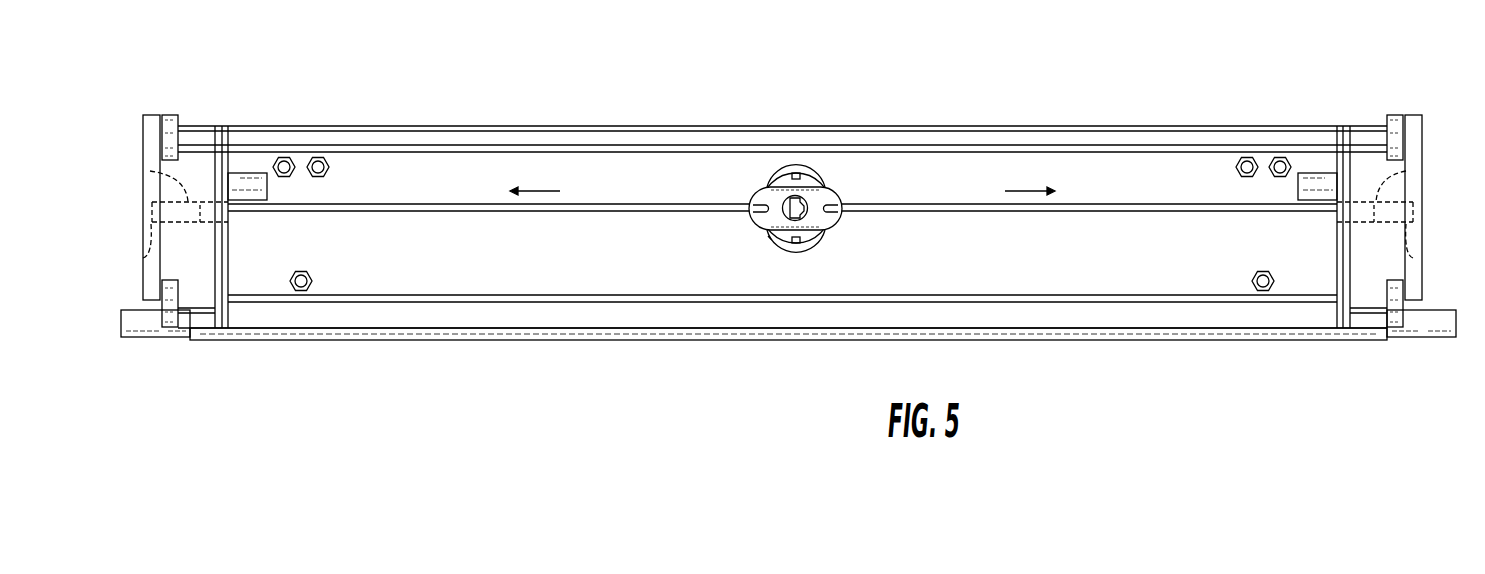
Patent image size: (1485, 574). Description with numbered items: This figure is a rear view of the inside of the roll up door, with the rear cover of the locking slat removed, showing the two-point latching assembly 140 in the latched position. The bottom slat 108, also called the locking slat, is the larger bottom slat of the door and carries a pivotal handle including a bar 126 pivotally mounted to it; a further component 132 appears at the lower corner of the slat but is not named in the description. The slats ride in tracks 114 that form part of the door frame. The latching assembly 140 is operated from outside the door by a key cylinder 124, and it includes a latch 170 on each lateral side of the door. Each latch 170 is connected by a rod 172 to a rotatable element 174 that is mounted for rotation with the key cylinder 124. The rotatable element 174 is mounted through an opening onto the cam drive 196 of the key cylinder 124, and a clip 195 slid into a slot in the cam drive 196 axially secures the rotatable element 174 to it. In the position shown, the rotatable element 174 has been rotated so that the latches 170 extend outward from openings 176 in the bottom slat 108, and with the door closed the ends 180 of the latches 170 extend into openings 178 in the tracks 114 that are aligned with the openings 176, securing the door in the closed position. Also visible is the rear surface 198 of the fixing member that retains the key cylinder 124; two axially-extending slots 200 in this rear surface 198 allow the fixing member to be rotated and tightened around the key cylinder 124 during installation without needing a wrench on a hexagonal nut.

The bottom slat 108 is at (607, 268).
The tracks 114 is at (151, 115).
The key cylinder 124 is at (789, 182).
The bar 126 is at (1408, 338).
The left mounting foot 132 is at (170, 338).
The latching assembly 140 is at (862, 188).
The latch 170 is at (200, 222).
The rod 172 is at (541, 213).
The rotatable element 174 is at (815, 197).
The openings 176 is at (150, 171).
The openings 178 is at (143, 258).
The ends 180 is at (150, 212).
The clip 195 is at (808, 212).
The cam drive 196 is at (800, 216).
The rear surface 198 is at (772, 238).
The axially-extending slots 200 is at (796, 176).